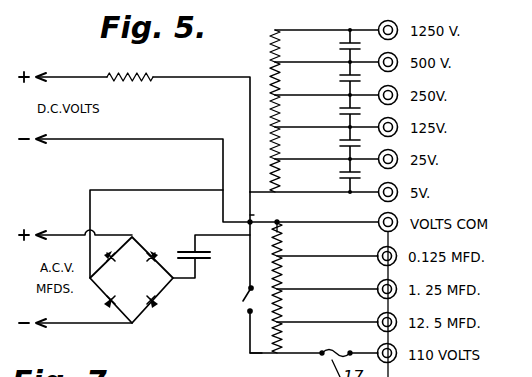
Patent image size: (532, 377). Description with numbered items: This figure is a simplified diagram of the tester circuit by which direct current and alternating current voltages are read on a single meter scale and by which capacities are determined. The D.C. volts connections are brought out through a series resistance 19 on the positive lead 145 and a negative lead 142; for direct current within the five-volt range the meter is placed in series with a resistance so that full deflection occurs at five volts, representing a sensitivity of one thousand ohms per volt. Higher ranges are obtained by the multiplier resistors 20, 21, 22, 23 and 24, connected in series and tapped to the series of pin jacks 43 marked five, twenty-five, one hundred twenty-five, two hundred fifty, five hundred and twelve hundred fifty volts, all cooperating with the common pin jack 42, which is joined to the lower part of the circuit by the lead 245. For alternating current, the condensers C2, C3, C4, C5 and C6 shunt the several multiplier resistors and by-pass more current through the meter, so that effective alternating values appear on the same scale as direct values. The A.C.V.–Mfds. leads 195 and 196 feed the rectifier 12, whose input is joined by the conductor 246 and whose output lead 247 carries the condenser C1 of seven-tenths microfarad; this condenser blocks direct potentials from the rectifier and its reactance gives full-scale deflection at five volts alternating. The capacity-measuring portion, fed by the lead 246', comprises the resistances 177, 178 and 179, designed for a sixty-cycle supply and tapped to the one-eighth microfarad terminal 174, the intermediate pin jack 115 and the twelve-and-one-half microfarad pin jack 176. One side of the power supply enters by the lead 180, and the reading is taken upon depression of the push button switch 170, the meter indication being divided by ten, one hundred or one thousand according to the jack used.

The series resistor 19 is at (131, 82).
The positive D.C. volts lead 145 is at (192, 78).
The negative D.C. volts lead 142 is at (152, 140).
The connecting lead 245 is at (253, 215).
The rectifier input lead 246 is at (156, 234).
The lead to capacitance divider 246' is at (304, 236).
The multiplier resistor 24 is at (281, 48).
The multiplier resistor 23 is at (281, 81).
The multiplier resistor 22 is at (281, 113).
The multiplier resistor 21 is at (281, 145).
The multiplier resistor 20 is at (281, 178).
The pin jacks 43 is at (397, 25).
The common pin jack 42 is at (397, 219).
The 0.125 mfd. terminal 174 is at (397, 250).
The 1.25 MFD terminal 115 is at (377, 287).
The 12.5 mfd. pin jack 176 is at (377, 320).
The resistance 177 is at (283, 275).
The resistance 178 is at (283, 308).
The resistance 179 is at (283, 340).
The push button switch 170 is at (245, 299).
The lead to 110 volt supply 180 is at (259, 355).
The positive A.C. volts lead 195 is at (65, 234).
The negative A.C. volts lead 196 is at (90, 325).
The rectifier 12 is at (157, 302).
The rectifier output lead 247 is at (187, 281).
The condenser C1 is at (203, 258).
The condenser C2 is at (343, 175).
The condenser C3 is at (343, 143).
The condenser C4 is at (343, 111).
The condenser C5 is at (343, 78).
The condenser C6 is at (343, 46).